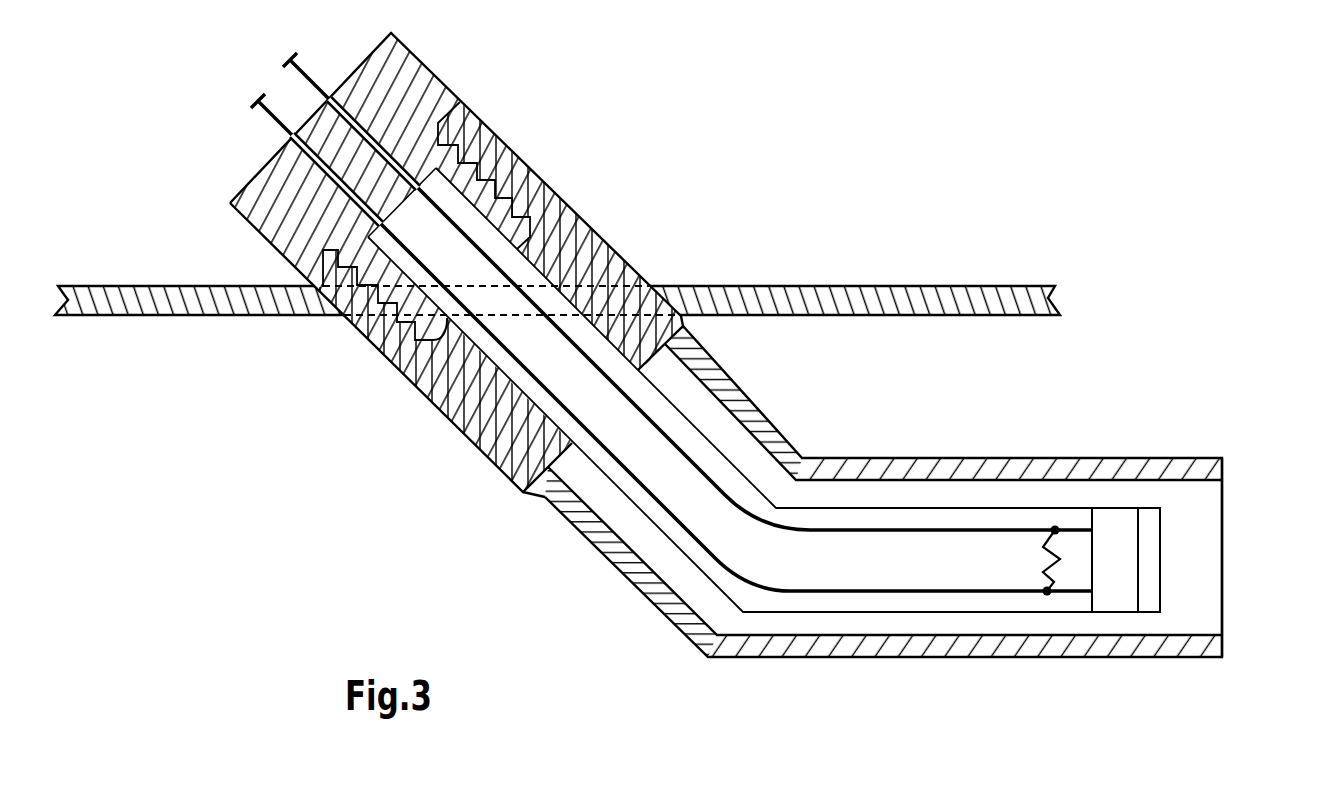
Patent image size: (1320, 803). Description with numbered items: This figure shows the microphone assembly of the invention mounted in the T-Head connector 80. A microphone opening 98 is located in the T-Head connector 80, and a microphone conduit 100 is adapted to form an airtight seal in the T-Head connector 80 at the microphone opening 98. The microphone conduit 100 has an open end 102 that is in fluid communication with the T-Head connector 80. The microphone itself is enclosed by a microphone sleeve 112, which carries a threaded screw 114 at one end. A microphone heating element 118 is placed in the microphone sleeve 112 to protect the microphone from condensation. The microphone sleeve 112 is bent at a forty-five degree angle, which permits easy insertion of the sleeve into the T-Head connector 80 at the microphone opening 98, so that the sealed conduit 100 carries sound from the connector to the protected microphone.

The T-Head connector 80 is at (828, 286).
The microphone opening 98 is at (647, 287).
The microphone conduit 100 is at (697, 641).
The open end 102 is at (1222, 551).
The microphone sleeve 112 is at (540, 262).
The threaded screw 114 is at (483, 197).
The microphone heating element 118 is at (1045, 563).